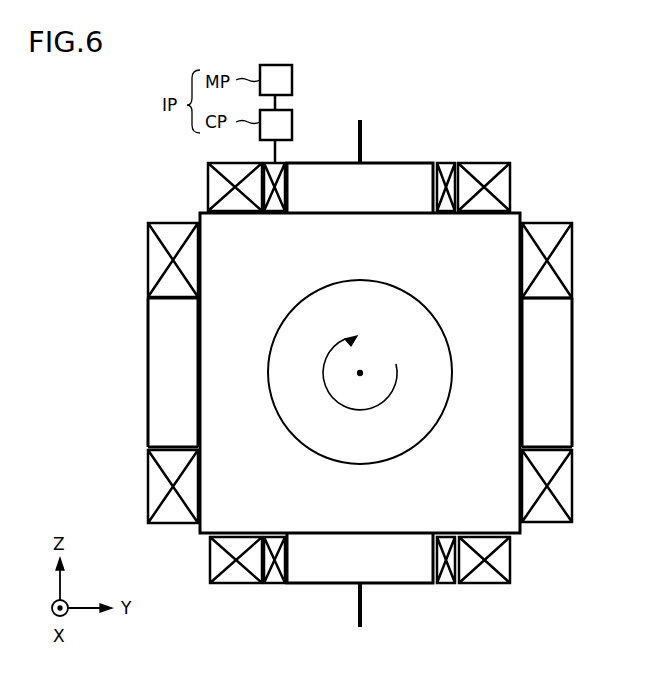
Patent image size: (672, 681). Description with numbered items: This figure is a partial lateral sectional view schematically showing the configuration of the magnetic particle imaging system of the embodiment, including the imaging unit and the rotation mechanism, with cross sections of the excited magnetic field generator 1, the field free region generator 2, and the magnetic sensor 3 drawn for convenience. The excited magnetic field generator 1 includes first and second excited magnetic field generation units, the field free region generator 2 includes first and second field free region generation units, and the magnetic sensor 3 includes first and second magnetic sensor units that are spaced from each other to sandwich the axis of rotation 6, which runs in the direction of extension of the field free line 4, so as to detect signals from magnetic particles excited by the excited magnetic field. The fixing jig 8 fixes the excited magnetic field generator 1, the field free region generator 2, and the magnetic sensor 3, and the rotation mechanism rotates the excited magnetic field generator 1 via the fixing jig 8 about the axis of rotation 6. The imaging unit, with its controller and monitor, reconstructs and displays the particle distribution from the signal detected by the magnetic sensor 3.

The excited magnetic field generator 1 is at (494, 163).
The field free region generator 2 is at (572, 258).
The magnetic sensor 3 is at (446, 163).
The field free line 4 is at (356, 613).
The axis of rotation 6 is at (361, 372).
The fixing jig 8 is at (392, 163).